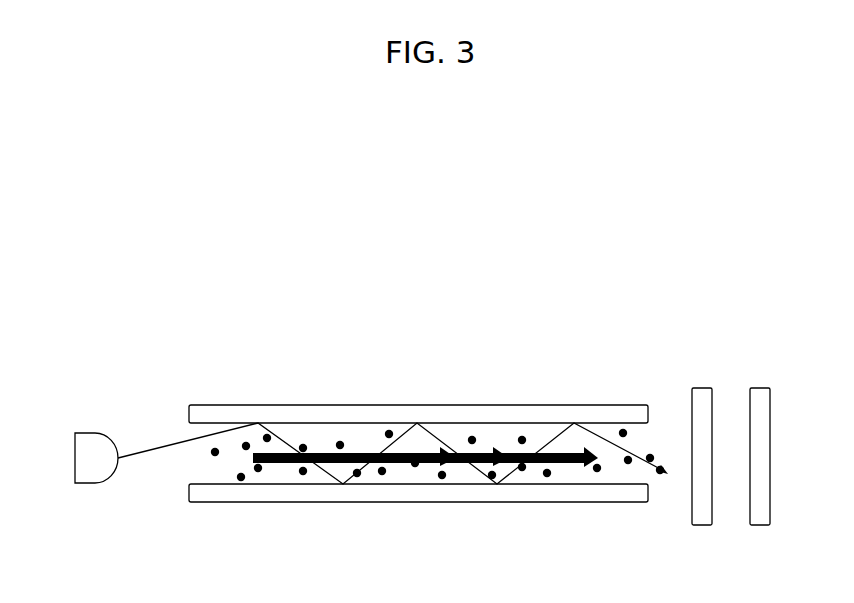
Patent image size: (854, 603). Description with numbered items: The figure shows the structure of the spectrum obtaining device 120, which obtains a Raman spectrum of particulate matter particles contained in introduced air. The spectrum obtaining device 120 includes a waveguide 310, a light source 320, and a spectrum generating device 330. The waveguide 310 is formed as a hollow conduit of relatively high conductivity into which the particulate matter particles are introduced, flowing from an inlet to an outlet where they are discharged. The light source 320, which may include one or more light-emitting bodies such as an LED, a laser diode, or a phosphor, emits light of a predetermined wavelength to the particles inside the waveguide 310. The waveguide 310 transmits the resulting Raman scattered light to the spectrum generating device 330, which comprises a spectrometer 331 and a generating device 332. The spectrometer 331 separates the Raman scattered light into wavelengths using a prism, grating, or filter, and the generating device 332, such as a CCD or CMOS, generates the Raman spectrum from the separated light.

The spectrum obtaining device 120 is at (501, 306).
The waveguide 310 is at (491, 405).
The light source 320 is at (77, 433).
The spectrum generating device 330 is at (808, 357).
The spectrometer 331 is at (704, 388).
The generating device 332 is at (761, 388).